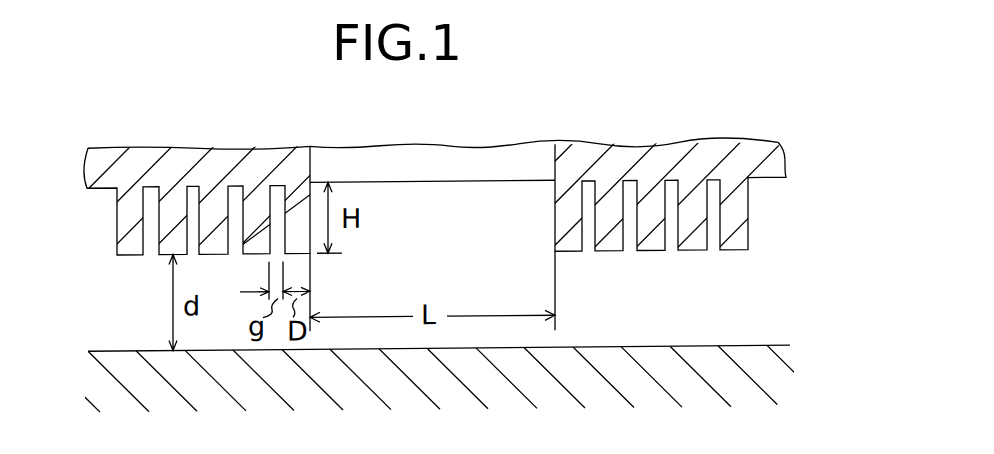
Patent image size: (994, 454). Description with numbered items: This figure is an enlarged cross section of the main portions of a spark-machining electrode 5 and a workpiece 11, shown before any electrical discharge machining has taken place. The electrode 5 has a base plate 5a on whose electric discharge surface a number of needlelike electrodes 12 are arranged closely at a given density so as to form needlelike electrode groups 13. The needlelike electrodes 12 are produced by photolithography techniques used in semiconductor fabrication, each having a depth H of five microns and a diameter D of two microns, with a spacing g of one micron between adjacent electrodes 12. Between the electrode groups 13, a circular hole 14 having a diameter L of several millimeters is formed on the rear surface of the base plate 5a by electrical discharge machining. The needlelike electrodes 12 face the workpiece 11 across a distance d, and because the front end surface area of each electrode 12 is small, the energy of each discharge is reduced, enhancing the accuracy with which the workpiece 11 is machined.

The spark-machining electrode 5 is at (801, 158).
The base plate 5a is at (638, 156).
The workpiece 11 is at (748, 360).
The needlelike electrode 12 is at (131, 256).
The needlelike electrode group 13 is at (99, 240).
The circular hole 14 is at (311, 162).